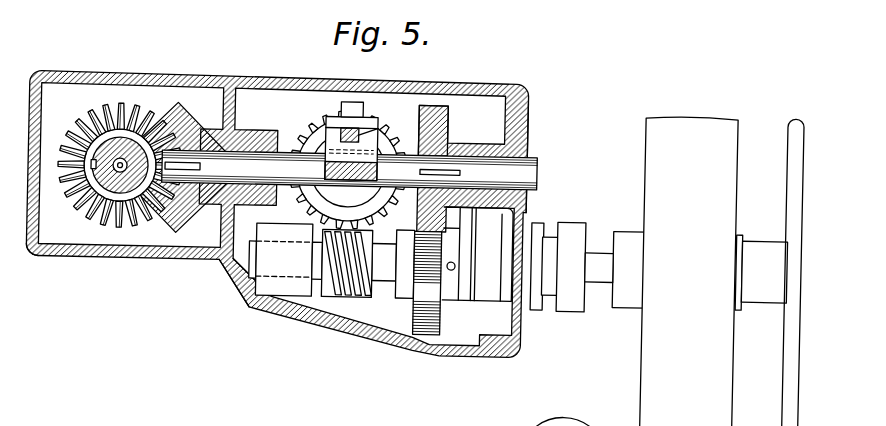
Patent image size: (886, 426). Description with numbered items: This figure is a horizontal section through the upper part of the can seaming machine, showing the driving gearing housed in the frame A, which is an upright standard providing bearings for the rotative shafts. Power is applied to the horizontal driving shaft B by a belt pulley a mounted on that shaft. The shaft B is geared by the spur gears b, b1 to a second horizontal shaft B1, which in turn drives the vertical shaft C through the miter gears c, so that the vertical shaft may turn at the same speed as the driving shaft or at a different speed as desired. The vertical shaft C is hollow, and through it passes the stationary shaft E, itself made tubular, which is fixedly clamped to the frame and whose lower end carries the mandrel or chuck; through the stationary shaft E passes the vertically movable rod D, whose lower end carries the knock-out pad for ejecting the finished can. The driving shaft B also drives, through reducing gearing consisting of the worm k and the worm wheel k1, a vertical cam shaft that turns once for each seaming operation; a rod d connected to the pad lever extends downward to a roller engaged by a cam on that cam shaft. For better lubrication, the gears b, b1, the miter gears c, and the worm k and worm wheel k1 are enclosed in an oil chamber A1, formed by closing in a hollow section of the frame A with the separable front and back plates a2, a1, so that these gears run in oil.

The frame A is at (470, 80).
The oil chamber A1 is at (210, 285).
The front plate a2 is at (33, 264).
The back plate a1 is at (537, 111).
The belt pulley a is at (689, 271).
The horizontal driving shaft B is at (598, 275).
The horizontal shaft B1 is at (530, 176).
The spur gear b is at (446, 317).
The spur gear b1 is at (447, 128).
The vertical shaft C is at (117, 182).
The miter gear c is at (176, 177).
The vertically movable rod D is at (112, 182).
The stationary shaft E is at (125, 159).
The rod d is at (377, 128).
The worm k is at (347, 291).
The worm wheel k1 is at (306, 124).